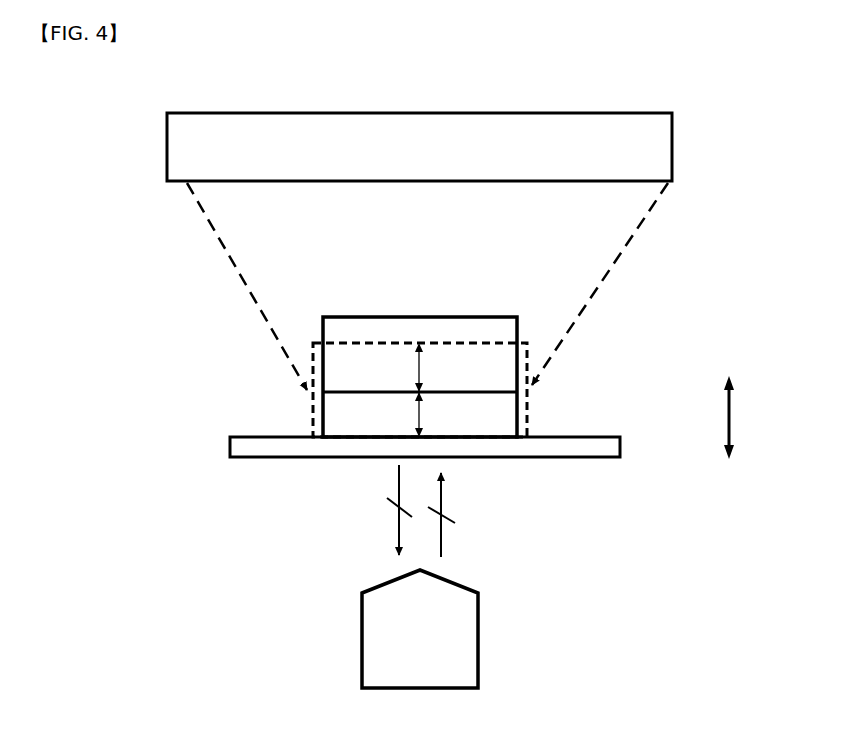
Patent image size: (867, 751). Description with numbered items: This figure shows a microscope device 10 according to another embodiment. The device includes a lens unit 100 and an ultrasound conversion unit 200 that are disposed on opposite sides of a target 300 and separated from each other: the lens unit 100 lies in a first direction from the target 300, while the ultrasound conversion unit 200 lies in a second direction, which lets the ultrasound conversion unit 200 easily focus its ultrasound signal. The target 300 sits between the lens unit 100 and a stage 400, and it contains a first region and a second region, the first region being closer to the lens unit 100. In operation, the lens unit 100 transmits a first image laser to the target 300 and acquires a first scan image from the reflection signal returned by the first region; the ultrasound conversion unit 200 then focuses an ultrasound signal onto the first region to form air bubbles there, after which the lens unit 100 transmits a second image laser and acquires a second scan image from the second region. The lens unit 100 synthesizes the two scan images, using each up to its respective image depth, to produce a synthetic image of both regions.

The microscope device 10 is at (437, 91).
The lens unit 100 is at (361, 640).
The ultrasound conversion unit 200 is at (166, 147).
The target 300 is at (427, 330).
The stage 400 is at (230, 442).